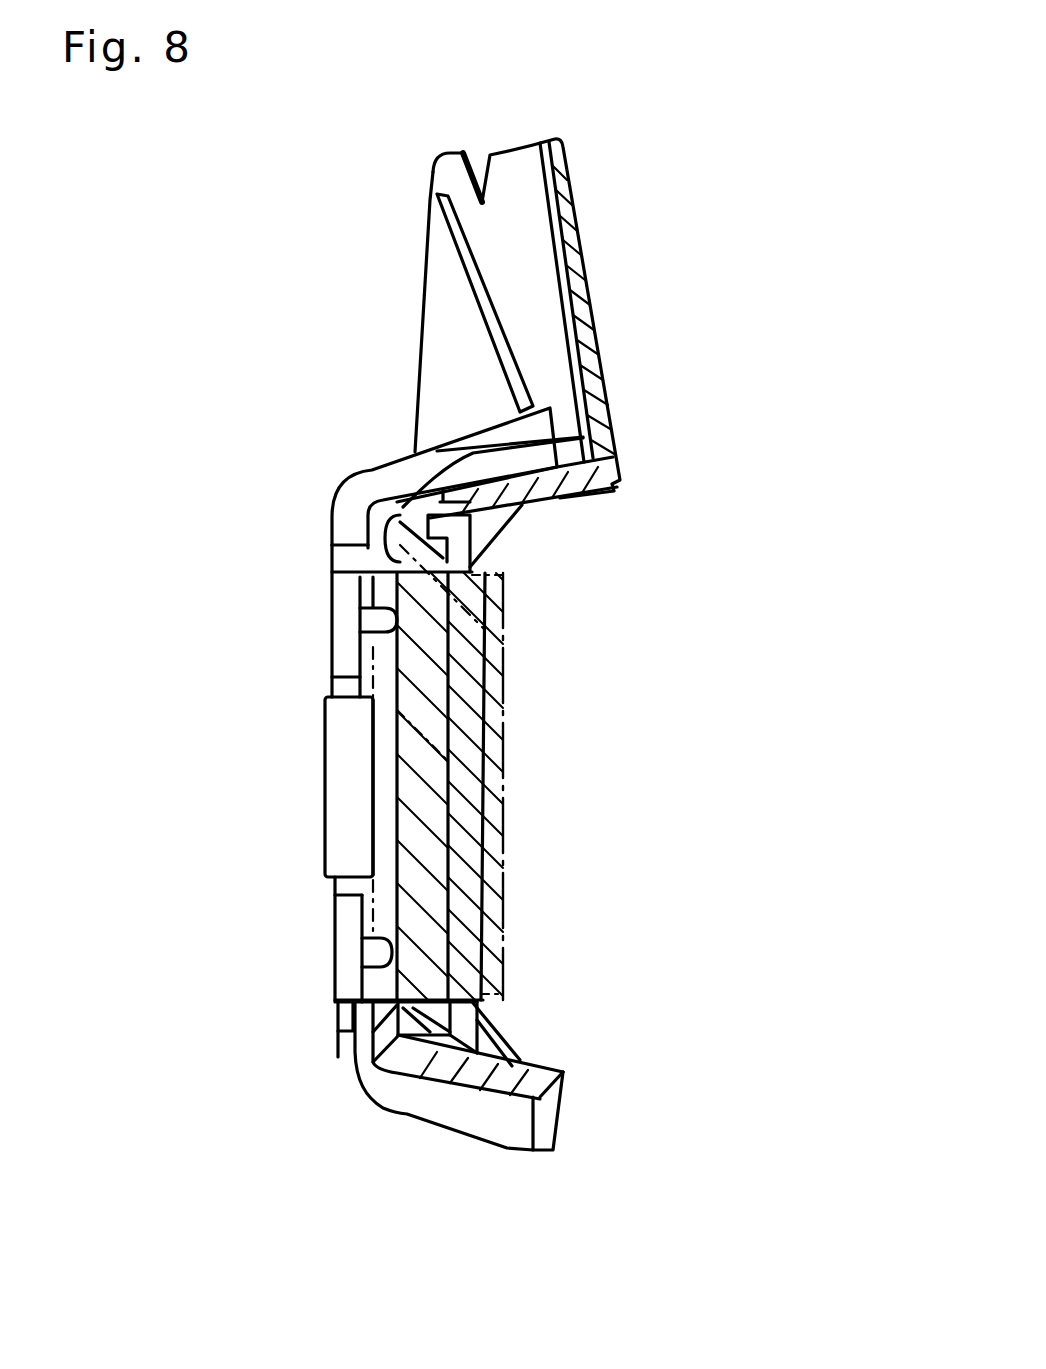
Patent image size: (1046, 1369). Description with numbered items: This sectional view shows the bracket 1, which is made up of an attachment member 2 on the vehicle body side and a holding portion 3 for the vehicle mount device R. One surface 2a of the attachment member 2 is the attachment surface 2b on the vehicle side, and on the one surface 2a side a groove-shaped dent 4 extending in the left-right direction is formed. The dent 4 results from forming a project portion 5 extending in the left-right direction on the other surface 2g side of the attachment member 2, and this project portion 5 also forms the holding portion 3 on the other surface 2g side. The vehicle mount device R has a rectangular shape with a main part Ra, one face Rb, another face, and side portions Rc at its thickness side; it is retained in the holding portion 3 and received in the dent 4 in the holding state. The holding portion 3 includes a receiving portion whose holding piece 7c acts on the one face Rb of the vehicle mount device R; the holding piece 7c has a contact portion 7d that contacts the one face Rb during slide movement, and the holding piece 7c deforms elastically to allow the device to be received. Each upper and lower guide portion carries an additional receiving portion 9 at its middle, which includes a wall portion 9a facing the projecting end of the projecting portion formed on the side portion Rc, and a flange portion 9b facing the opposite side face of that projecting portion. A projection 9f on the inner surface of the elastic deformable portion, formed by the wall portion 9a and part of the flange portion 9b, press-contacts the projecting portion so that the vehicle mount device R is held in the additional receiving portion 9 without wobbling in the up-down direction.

The bracket 1 is at (593, 128).
The attachment member 2 is at (622, 328).
The one surface 2a is at (622, 328).
The attachment surface 2b is at (596, 301).
The other surface 2g is at (458, 277).
The holding portion 3 is at (292, 500).
The dent 4 is at (543, 706).
The project portion 5 is at (343, 1047).
The holding piece 7c is at (340, 752).
The contact portion 7d is at (373, 830).
The additional receiving portion 9 is at (410, 800).
The wall portion 9a is at (407, 537).
The flange portion 9b is at (377, 533).
The projection 9f is at (593, 430).
The vehicle mount device R is at (613, 786).
The main part Ra is at (503, 877).
The one face Rb is at (373, 657).
The side portion Rc is at (487, 577).